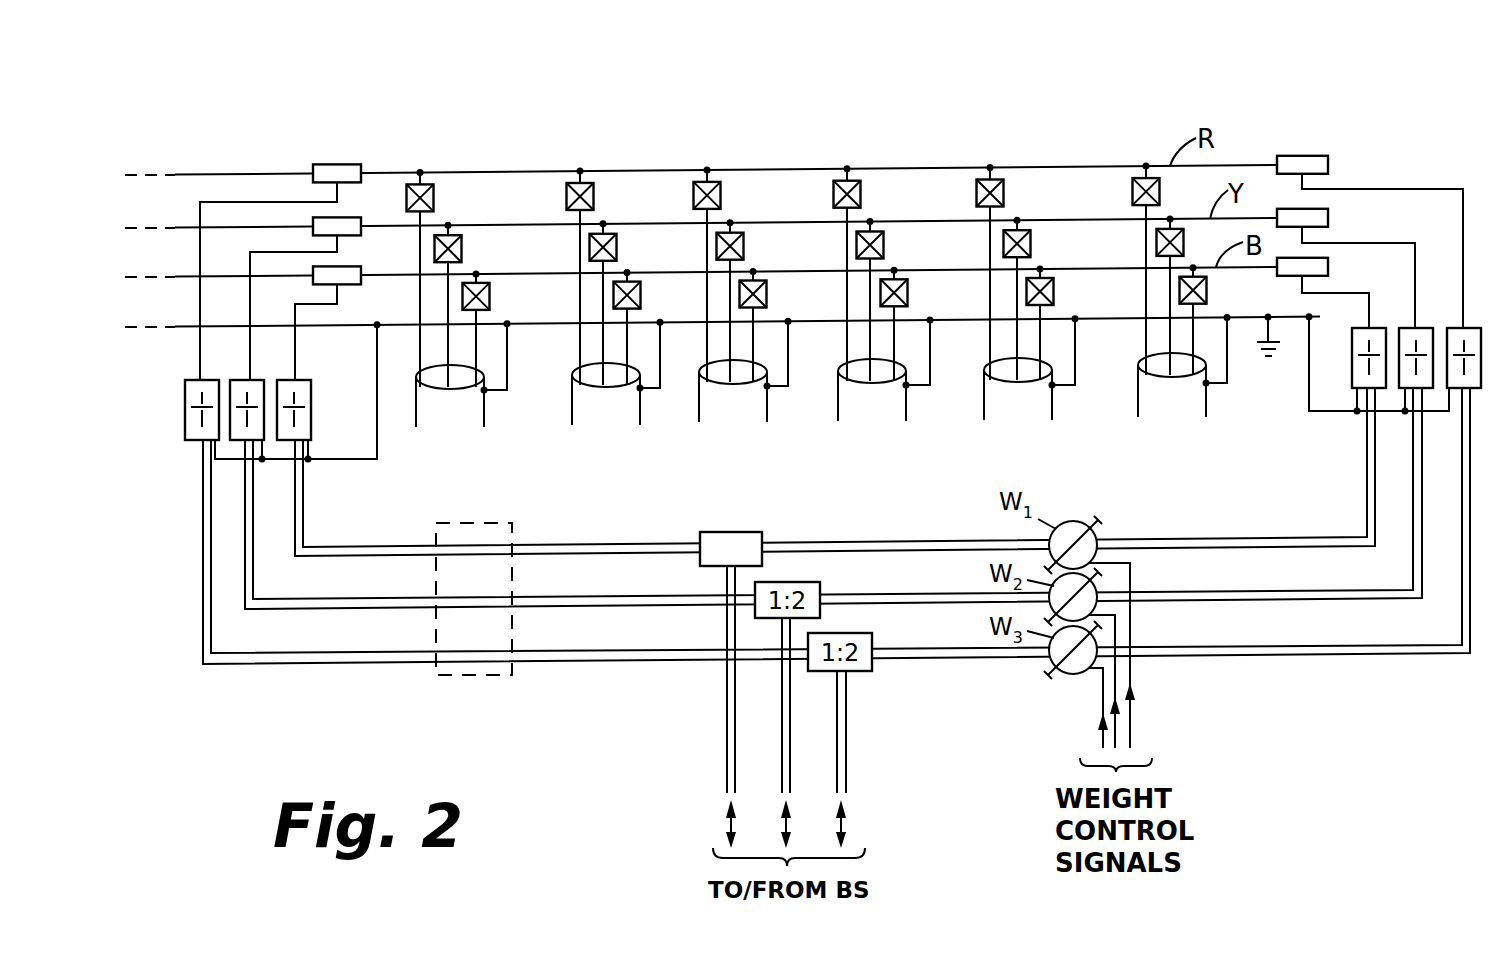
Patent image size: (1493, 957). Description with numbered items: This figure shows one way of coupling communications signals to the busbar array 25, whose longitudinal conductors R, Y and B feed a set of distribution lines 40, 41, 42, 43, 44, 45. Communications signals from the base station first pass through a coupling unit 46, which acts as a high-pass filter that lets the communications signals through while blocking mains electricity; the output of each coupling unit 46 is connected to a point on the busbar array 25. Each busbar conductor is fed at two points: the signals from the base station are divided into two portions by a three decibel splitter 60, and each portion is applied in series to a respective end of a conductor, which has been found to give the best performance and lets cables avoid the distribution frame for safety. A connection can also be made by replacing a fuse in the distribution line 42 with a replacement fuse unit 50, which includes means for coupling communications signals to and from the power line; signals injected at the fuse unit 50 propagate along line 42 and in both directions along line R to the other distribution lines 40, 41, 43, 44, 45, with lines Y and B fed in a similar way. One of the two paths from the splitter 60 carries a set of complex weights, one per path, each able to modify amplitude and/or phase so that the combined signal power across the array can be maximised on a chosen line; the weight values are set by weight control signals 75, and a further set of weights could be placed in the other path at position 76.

The busbar array 25 is at (746, 136).
The replacement fuse unit 50 is at (720, 184).
The distribution line 40 is at (464, 408).
The distribution line 41 is at (614, 406).
The distribution line 42 is at (739, 403).
The distribution line 43 is at (876, 403).
The distribution line 44 is at (1016, 403).
The distribution line 45 is at (1174, 403).
The coupling unit 46 is at (190, 423).
The 3 dB splitter 60 is at (752, 532).
The weight control signals 75 is at (1154, 763).
The position for further set of weights 76 is at (460, 676).